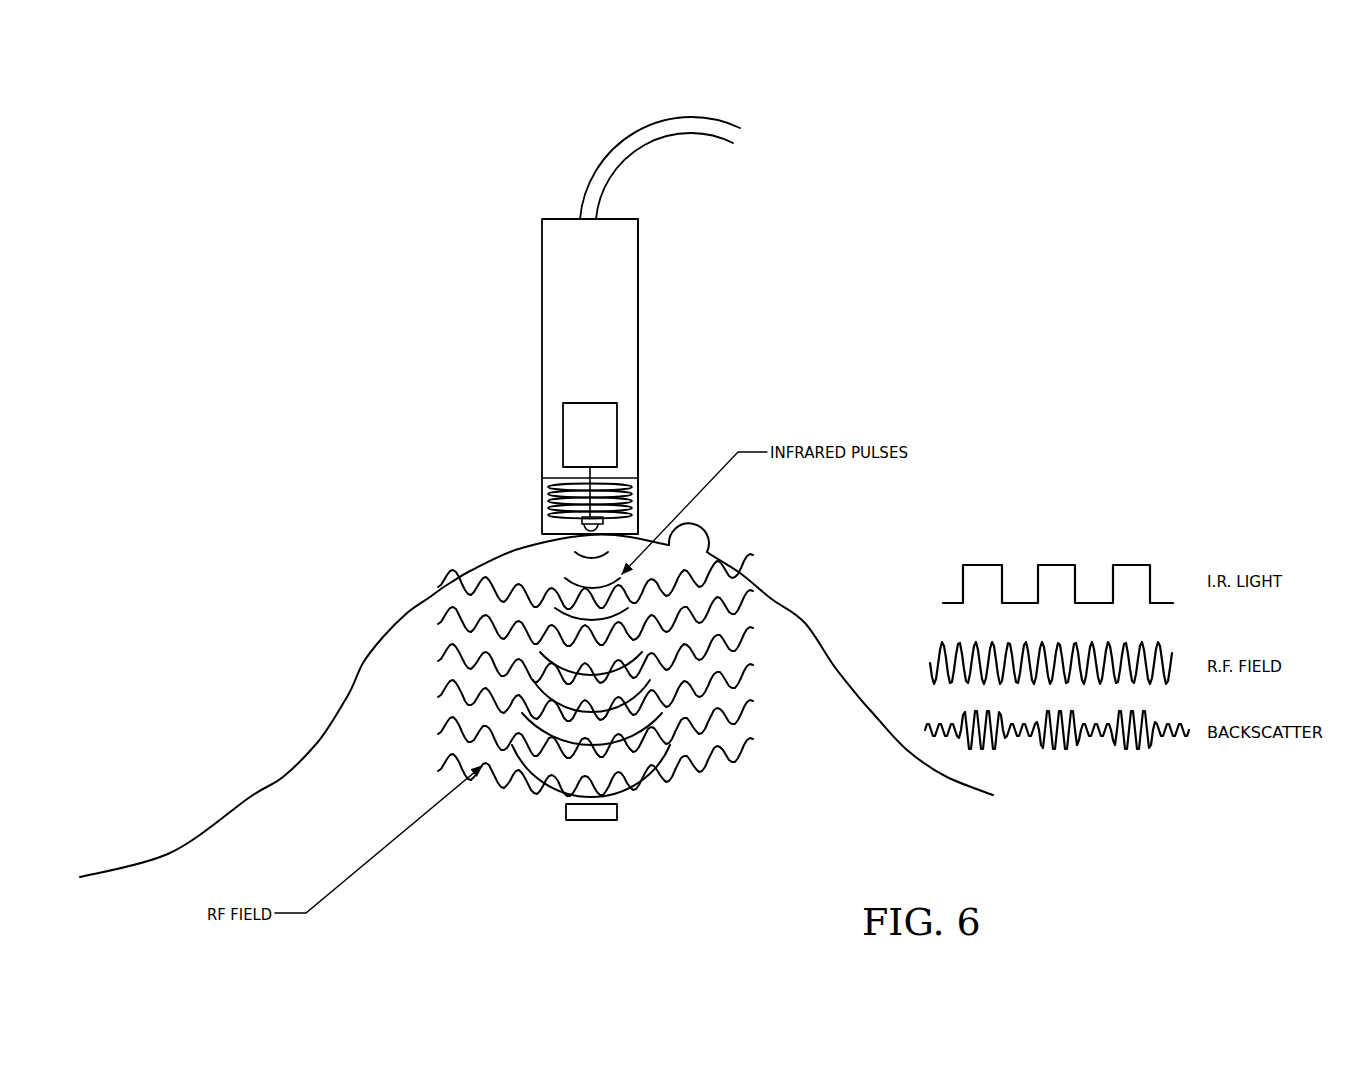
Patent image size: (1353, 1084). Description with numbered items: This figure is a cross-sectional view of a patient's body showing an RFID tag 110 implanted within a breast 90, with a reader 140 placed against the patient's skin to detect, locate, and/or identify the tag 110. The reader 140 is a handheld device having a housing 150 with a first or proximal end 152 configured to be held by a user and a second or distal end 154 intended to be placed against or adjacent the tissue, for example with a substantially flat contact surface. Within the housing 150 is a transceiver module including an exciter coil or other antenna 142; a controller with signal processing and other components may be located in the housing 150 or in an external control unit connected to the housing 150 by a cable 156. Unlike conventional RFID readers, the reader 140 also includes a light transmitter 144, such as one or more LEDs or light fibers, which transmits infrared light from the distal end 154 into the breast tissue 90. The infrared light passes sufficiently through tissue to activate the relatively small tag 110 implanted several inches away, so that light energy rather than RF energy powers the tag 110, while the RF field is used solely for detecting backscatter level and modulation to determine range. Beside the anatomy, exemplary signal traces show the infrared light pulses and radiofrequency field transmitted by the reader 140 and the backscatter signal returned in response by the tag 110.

The reader 140 is at (705, 320).
The housing 150 is at (540, 312).
The proximal end 152 is at (638, 255).
The cable 156 is at (620, 140).
The exciter coil 142 is at (528, 447).
The distal end 154 is at (543, 506).
The light transmitter 144 is at (580, 522).
The breast 90 is at (805, 618).
The RFID tag 110 is at (650, 853).